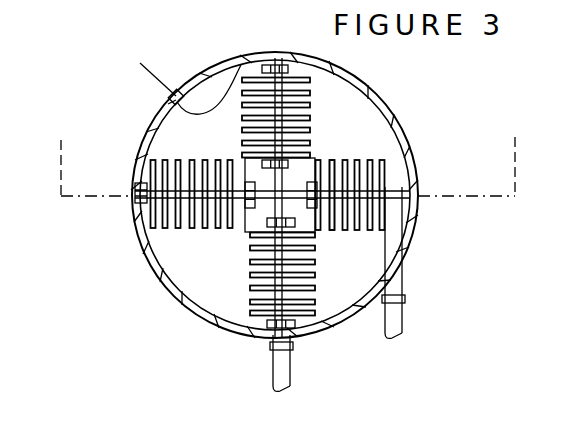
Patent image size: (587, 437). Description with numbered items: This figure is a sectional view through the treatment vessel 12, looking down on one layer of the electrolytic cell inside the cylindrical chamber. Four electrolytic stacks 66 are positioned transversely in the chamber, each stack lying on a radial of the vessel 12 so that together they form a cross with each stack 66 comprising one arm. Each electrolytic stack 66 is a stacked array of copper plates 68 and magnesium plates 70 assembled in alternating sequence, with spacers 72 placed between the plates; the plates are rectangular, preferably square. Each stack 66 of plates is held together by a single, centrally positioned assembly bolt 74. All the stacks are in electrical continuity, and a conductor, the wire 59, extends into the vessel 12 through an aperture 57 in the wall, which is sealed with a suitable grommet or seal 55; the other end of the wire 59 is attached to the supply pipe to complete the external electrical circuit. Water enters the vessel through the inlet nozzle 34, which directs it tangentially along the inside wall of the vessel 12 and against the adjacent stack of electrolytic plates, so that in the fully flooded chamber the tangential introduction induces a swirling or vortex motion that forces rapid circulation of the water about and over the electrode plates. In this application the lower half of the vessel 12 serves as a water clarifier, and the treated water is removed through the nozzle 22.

The treatment vessel 12 is at (137, 150).
The nozzle 22 is at (291, 356).
The inlet nozzle 34 is at (395, 287).
The grommet or seal 55 is at (178, 92).
The aperture 57 is at (168, 104).
The wire 59 is at (158, 82).
The electrolytic stacks 66 is at (261, 74).
The copper plates 68 is at (371, 160).
The magnesium plates 70 is at (331, 161).
The spacers 72 is at (378, 200).
The assembly bolt 74 is at (285, 151).